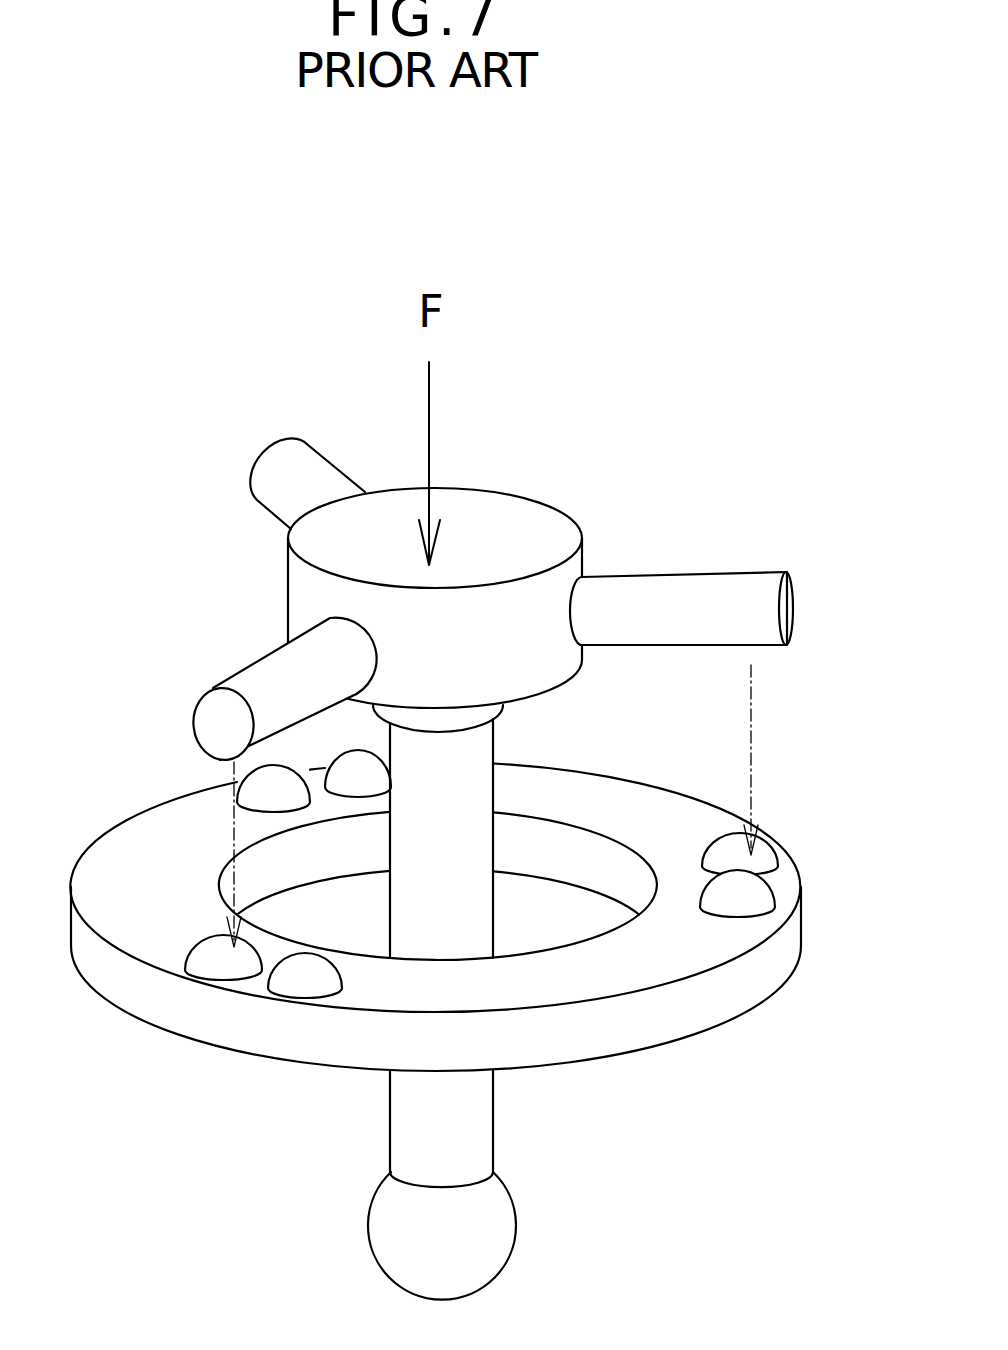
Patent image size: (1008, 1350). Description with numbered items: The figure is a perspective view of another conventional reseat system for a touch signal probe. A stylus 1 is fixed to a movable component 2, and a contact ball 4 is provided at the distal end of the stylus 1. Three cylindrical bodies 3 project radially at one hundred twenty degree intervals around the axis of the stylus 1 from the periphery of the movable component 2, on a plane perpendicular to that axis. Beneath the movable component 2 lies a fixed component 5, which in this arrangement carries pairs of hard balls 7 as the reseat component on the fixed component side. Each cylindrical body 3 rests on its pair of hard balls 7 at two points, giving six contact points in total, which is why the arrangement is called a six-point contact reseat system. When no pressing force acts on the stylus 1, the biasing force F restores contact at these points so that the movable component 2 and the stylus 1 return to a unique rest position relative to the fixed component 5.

The stylus 1 is at (432, 1125).
The movable component 2 is at (507, 520).
The cylindrical bodies 3 is at (290, 488).
The contact ball 4 is at (422, 1235).
The fixed component 5 is at (658, 953).
The hard balls 7 is at (353, 770).